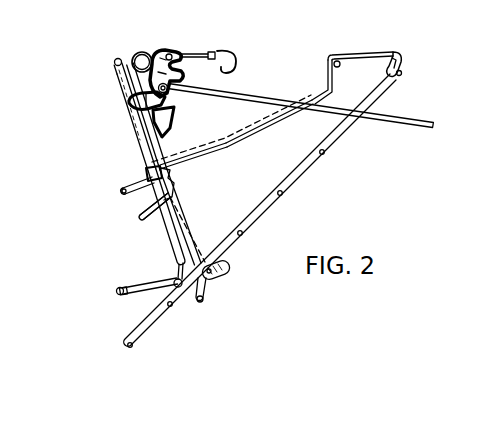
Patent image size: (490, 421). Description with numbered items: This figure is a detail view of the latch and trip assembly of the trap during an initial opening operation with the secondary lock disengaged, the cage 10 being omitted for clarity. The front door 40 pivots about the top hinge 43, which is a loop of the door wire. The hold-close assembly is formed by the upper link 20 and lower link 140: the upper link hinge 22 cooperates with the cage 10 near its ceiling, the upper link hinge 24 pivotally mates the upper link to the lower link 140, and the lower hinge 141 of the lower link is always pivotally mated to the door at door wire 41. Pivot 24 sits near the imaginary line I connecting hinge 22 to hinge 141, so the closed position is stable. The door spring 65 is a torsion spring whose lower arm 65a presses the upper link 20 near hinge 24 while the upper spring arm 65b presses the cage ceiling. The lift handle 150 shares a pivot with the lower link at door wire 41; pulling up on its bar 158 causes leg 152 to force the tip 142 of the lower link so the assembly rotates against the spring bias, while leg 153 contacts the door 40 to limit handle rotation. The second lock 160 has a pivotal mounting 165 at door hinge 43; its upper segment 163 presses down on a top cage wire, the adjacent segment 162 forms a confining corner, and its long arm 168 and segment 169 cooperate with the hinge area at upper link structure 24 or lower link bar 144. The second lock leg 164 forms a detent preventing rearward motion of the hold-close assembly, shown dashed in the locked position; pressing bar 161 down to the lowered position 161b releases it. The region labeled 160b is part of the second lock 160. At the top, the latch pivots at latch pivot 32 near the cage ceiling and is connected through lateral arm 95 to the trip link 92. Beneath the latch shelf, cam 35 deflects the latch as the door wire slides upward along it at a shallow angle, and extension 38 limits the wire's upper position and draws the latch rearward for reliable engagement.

The cage 10 is at (360, 72).
The upper link 20 is at (137, 142).
The upper link hinge 22 is at (115, 60).
The upper link hinge 24 is at (122, 190).
The latch pivot 32 is at (172, 52).
The cam 35 is at (171, 122).
The extension 38 is at (175, 93).
The front door 40 is at (293, 180).
The door wire 41 is at (223, 264).
The top hinge 43 is at (396, 57).
The door spring 65 is at (136, 52).
The lower arm 65a is at (147, 172).
The upper spring arm 65b is at (223, 50).
The trip link 92 is at (234, 91).
The lateral arm 95 is at (128, 96).
The lower link 140 is at (183, 236).
The lower hinge 141 is at (224, 275).
The tip 142 is at (173, 274).
The lower link bar 144 is at (124, 191).
The lift handle 150 is at (138, 282).
The leg 152 is at (176, 287).
The leg 153 is at (200, 303).
The bar 158 is at (117, 292).
The second lock 160 is at (241, 150).
The rail section 160b is at (262, 131).
The bar 161 is at (141, 181).
The lowered position 161b is at (140, 214).
The segment 162 is at (330, 68).
The upper segment 163 is at (338, 58).
The second lock leg 164 is at (171, 180).
The pivotal mounting 165 is at (403, 61).
The long arm 168 is at (213, 148).
The segment 169 is at (143, 190).
The imaginary line I is at (197, 227).